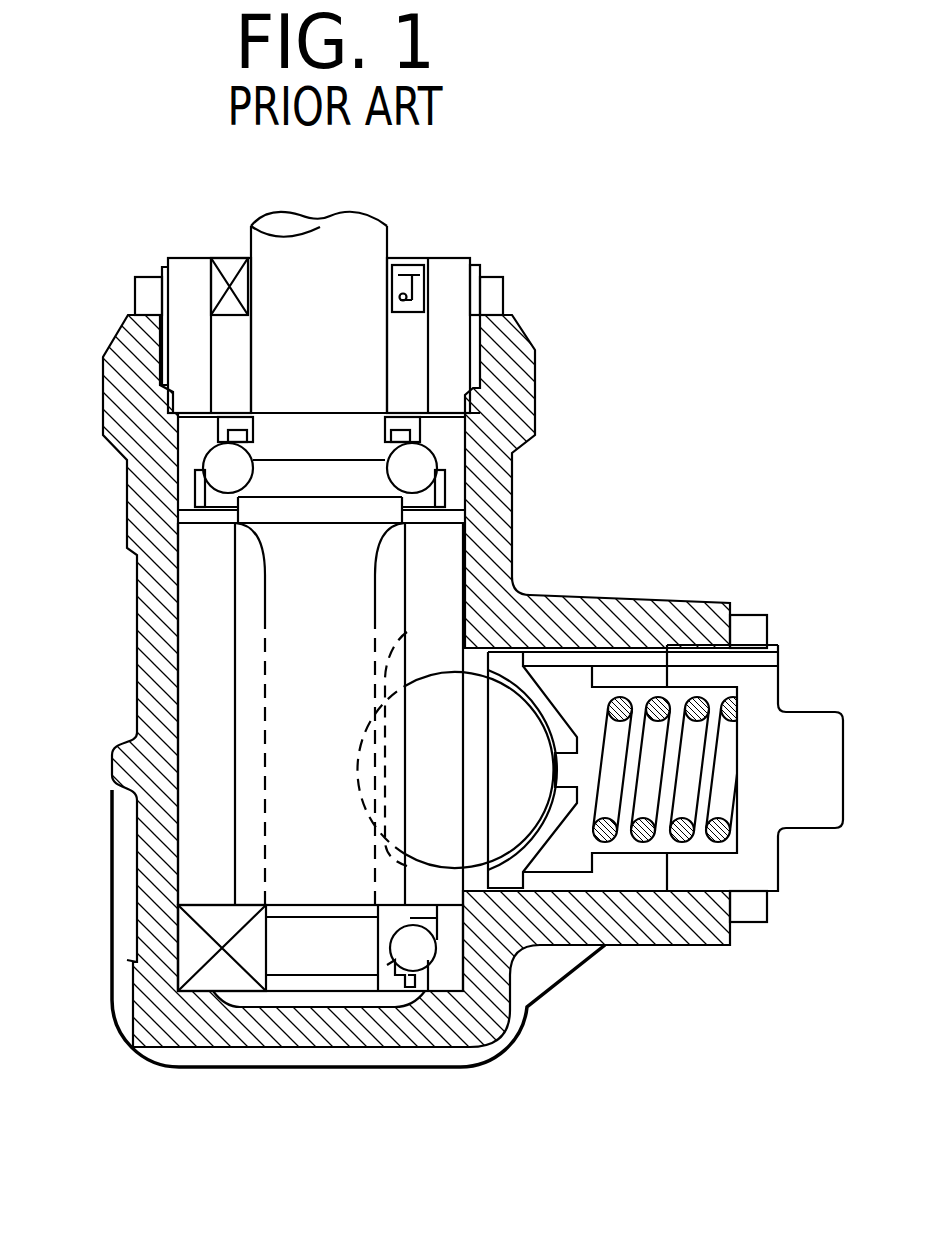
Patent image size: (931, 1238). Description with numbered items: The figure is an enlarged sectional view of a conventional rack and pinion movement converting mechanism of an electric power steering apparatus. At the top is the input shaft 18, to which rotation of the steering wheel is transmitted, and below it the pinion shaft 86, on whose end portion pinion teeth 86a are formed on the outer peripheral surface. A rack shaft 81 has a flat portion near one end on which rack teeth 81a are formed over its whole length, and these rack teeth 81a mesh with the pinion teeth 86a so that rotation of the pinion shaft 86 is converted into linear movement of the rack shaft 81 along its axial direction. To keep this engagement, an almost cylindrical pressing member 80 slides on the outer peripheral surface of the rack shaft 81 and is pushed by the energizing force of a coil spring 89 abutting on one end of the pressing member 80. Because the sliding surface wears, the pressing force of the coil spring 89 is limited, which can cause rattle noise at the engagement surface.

The input shaft 18 is at (251, 237).
The pressing member 80 is at (553, 660).
The rack shaft 81 is at (472, 783).
The rack teeth 81a is at (407, 632).
The pinion shaft 86 is at (277, 657).
The pinion teeth 86a is at (243, 720).
The coil spring 89 is at (703, 753).